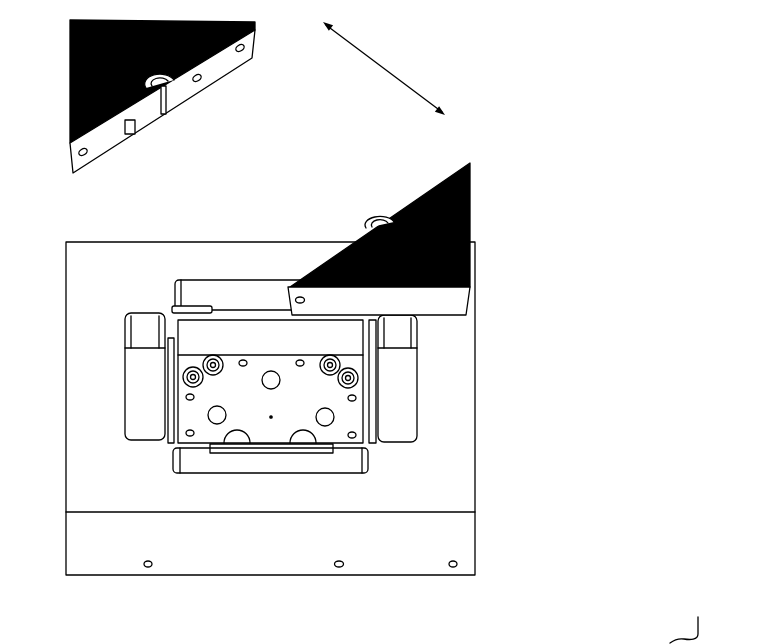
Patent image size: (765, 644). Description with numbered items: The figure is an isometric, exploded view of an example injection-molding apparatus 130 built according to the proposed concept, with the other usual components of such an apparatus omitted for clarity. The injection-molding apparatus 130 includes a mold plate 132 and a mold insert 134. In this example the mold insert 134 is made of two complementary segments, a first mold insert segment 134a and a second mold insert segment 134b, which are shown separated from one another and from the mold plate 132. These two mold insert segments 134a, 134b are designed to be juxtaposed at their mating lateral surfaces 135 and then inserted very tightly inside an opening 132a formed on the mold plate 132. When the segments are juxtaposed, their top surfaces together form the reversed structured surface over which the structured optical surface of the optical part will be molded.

The injection-molding apparatus 130 is at (600, 169).
The mold plate 132 is at (465, 460).
The opening 132a is at (355, 410).
The mold insert 134 is at (270, 167).
The mold insert segment 134a is at (231, 67).
The mold insert segment 134b is at (412, 216).
The mating lateral surfaces 135 is at (177, 98).